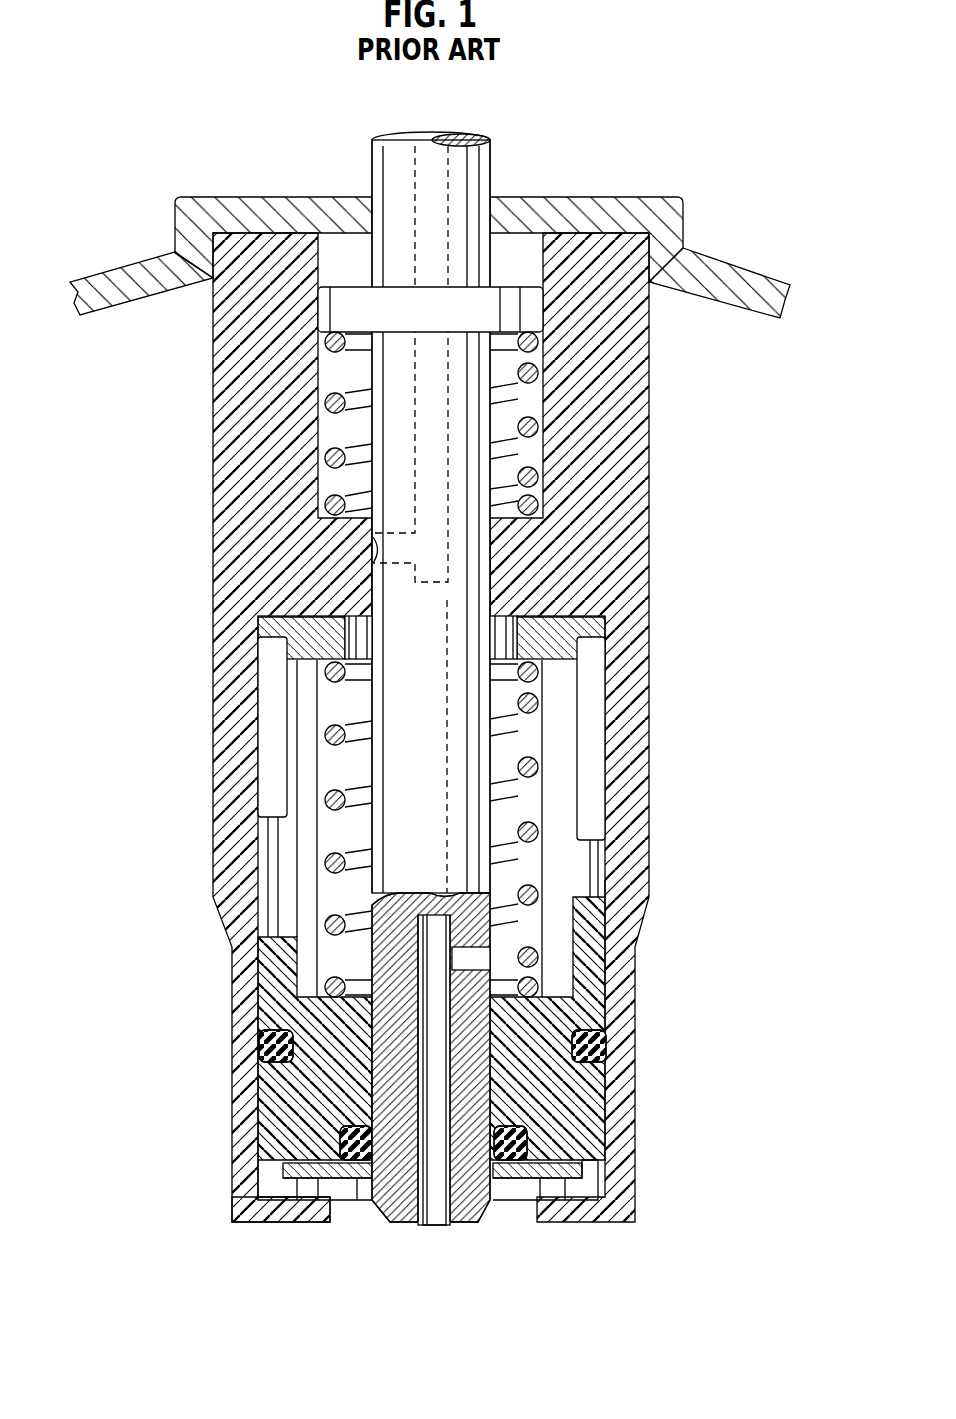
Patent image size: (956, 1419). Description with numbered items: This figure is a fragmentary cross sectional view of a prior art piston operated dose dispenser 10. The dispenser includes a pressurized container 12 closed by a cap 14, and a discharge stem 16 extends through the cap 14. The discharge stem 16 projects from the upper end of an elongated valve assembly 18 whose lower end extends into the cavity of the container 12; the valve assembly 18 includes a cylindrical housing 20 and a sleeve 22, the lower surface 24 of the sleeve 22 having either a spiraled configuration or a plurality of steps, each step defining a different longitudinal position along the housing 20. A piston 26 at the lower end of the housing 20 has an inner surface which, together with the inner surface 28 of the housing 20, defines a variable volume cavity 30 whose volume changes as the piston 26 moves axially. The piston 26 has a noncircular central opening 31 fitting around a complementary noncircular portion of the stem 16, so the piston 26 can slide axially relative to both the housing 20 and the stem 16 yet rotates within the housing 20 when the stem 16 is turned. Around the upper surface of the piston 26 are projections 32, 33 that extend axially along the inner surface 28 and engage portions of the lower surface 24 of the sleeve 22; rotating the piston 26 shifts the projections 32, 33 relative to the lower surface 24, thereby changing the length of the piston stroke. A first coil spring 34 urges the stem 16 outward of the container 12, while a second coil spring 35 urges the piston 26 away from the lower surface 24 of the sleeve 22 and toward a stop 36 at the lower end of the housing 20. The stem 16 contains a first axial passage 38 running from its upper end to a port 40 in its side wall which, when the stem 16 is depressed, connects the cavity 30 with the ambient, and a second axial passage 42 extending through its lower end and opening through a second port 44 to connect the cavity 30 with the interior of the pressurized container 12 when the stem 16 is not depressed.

The piston operated dose dispenser 10 is at (706, 228).
The pressurized container 12 is at (122, 265).
The cap 14 is at (610, 197).
The discharge stem 16 is at (346, 508).
The elongated valve assembly 18 is at (654, 551).
The cylindrical housing 20 is at (652, 636).
The sleeve 22 is at (592, 728).
The lower surface 24 is at (606, 838).
The piston 26 is at (552, 1076).
The inner surface 28 is at (300, 818).
The variable volume cavity 30 is at (302, 748).
The noncircular central opening 31 is at (373, 1105).
The projection 32 is at (292, 928).
The projection 33 is at (598, 882).
The first coil spring 34 is at (545, 410).
The second coil spring 35 is at (328, 850).
The stop 36 is at (588, 1222).
The first axial passage 38 is at (450, 192).
The port 40 is at (372, 560).
The second axial passage 42 is at (424, 1172).
The second port 44 is at (548, 943).